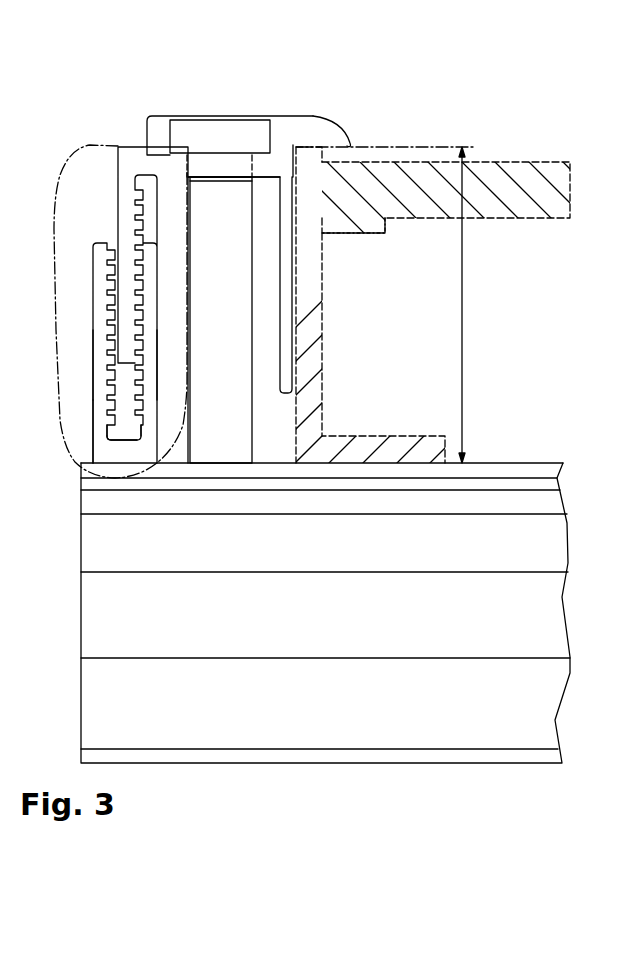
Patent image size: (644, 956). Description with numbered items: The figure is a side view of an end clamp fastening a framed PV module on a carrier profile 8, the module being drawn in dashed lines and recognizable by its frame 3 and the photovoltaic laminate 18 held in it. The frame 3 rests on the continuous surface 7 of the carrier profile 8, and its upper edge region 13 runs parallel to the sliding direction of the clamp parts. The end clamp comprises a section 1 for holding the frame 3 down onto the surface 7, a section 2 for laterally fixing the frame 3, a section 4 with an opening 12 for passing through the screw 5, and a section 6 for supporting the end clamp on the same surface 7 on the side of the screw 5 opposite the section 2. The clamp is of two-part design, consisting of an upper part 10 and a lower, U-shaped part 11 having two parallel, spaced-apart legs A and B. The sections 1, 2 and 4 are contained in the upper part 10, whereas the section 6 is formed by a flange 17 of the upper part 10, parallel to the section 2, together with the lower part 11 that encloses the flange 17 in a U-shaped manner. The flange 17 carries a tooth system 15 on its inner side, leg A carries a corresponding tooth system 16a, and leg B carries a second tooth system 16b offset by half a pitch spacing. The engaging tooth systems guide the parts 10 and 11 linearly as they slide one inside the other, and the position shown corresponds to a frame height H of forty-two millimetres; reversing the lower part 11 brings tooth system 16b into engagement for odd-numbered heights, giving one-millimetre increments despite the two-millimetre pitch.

The section for holding down 1 is at (317, 133).
The section for lateral fixing 2 is at (290, 294).
The frame 3 is at (313, 338).
The section with opening for passing through a screw 4 is at (215, 165).
The screw 5 is at (230, 116).
The section for supporting the end clamp 6 is at (54, 290).
The surface 7 is at (490, 458).
The carrier profile 8 is at (81, 617).
The upper part 10 is at (162, 158).
The lower, U-shaped part 11 is at (92, 418).
The opening 12 is at (187, 168).
The upper edge region 13 is at (320, 182).
The tooth system 15 is at (149, 231).
The tooth system 16a is at (129, 431).
The second tooth system 16b is at (121, 416).
The flange 17 is at (128, 227).
The photovoltaic laminate 18 is at (522, 175).
The frame height H is at (465, 297).
The leg A is at (150, 345).
The leg B is at (102, 345).